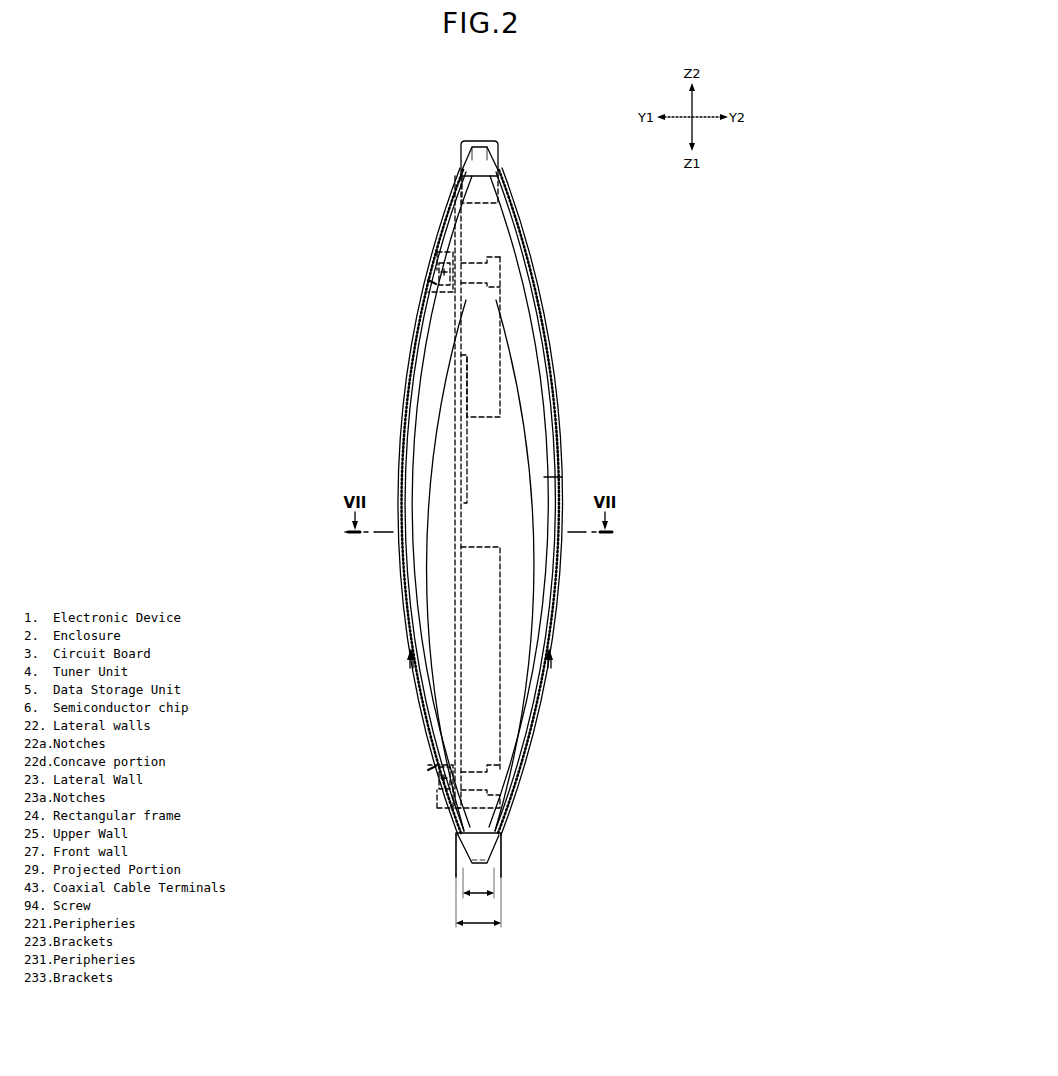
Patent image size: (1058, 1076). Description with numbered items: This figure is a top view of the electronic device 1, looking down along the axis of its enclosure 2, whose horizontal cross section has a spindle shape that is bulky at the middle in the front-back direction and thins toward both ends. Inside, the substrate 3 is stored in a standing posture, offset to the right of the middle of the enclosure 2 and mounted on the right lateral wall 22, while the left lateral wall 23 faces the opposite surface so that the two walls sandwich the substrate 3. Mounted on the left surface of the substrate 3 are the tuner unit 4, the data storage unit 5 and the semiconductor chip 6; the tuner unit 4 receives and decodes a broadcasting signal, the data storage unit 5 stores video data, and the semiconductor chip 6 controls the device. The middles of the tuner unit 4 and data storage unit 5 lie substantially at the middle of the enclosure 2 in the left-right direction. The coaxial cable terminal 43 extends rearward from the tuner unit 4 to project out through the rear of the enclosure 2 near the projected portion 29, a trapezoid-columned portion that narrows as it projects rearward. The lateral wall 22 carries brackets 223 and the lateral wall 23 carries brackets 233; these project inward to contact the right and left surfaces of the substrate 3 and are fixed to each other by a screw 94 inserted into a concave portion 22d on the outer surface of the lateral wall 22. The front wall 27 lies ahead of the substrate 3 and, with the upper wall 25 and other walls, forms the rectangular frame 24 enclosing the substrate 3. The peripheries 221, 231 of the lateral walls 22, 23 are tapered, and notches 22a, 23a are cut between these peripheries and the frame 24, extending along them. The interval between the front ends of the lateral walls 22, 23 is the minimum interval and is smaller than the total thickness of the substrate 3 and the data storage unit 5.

The electronic device 1 is at (363, 137).
The enclosure 2 is at (535, 178).
The substrate 3 is at (452, 530).
The tuner unit 4 is at (505, 350).
The data storage unit 5 is at (500, 626).
The semiconductor chip 6 is at (468, 452).
The lateral wall 22 is at (399, 439).
The notch 22a is at (409, 669).
The concave portion 22d is at (424, 281).
The lateral wall 23 is at (563, 579).
The notch 23a is at (551, 667).
The rectangular frame 24 is at (427, 350).
The upper wall 25 is at (562, 477).
The front wall 27 is at (475, 848).
The projected portion 29 is at (478, 150).
The coaxial cable terminal 43 is at (488, 144).
The screw 94 is at (444, 270).
The periphery 221 is at (400, 615).
The bracket 223 is at (447, 290).
The periphery 231 is at (548, 713).
The bracket 233 is at (516, 250).